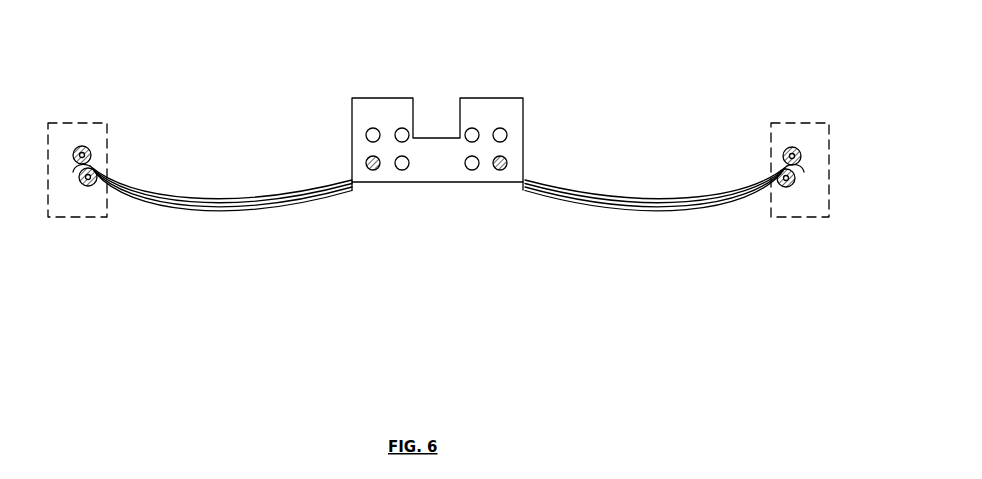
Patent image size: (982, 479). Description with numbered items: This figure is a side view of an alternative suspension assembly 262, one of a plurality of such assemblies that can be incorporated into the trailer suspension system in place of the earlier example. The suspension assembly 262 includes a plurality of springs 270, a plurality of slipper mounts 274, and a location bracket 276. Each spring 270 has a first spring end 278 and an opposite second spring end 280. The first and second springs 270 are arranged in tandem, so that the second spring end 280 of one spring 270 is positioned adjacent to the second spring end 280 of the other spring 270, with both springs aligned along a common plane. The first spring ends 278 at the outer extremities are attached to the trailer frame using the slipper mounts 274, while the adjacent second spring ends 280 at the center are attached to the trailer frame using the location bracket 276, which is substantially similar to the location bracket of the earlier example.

The suspension assembly 262 is at (157, 27).
The spring 270 is at (188, 210).
The slipper mount 274 is at (80, 217).
The location bracket 276 is at (388, 110).
The first spring end 278 is at (72, 170).
The second spring end 280 is at (358, 185).